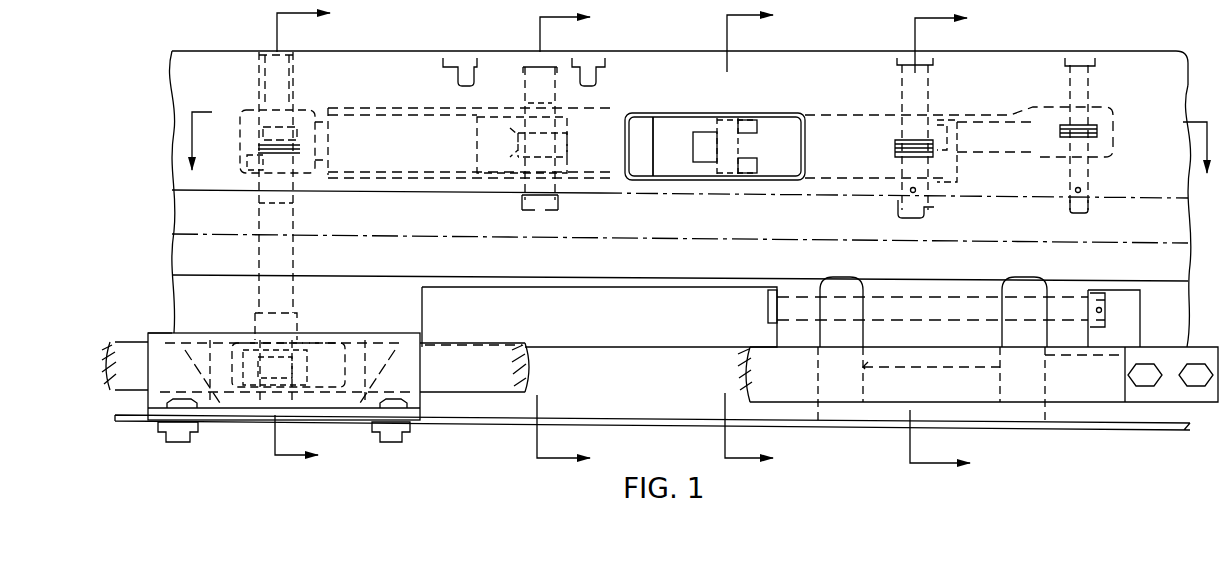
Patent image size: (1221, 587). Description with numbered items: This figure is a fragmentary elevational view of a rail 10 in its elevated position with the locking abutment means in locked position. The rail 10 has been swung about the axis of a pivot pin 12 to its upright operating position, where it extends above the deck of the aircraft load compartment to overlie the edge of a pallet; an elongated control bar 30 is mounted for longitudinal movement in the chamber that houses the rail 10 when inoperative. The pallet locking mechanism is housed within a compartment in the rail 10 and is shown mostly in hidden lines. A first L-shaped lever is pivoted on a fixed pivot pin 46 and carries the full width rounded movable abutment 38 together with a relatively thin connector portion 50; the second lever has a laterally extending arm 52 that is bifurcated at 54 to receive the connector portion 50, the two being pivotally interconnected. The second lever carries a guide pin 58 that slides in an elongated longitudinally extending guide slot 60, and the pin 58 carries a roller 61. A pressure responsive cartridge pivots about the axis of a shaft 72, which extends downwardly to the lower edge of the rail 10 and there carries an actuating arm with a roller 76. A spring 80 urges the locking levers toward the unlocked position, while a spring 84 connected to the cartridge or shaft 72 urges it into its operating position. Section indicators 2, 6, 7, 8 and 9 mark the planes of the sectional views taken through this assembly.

The section line 2- 2 is at (698, 127).
The section line 6- 6 is at (315, 238).
The section line 7- 7 is at (577, 241).
The section line 8- 8 is at (764, 241).
The section line 9- 9 is at (954, 241).
The rail 10 is at (1140, 34).
The pivot pin 12 is at (770, 315).
The control bar 30 is at (470, 336).
The movable abutment 38 is at (790, 150).
The pivot pin 46 is at (936, 207).
The connector portion 50 is at (705, 158).
The laterally extending arm 52 is at (668, 160).
The bifurcated portion 54 is at (752, 166).
The guide pin 58 is at (508, 200).
The guide slot 60 is at (493, 73).
The roller 61 is at (567, 138).
The shaft 72 is at (294, 212).
The roller 76 is at (300, 362).
The spring 80 is at (895, 147).
The spring 84 is at (252, 143).